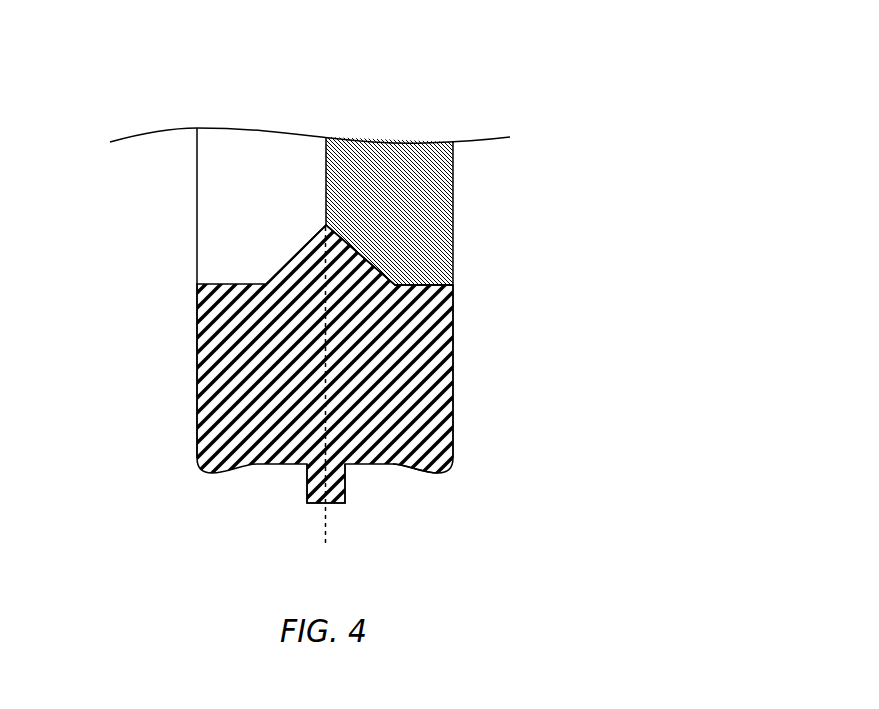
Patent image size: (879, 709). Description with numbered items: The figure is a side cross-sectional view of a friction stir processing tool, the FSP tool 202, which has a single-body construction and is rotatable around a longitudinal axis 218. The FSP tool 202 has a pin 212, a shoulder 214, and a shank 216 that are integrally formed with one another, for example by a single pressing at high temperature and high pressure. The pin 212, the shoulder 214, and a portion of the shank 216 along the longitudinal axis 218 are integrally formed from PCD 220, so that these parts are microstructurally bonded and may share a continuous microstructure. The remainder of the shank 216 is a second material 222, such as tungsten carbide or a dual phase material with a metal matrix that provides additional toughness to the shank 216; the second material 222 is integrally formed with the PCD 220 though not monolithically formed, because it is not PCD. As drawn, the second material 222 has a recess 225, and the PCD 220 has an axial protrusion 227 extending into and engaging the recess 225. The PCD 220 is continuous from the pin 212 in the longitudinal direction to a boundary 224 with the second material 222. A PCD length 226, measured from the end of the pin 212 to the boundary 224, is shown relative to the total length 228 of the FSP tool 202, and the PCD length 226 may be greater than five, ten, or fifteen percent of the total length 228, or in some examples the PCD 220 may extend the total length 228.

The FSP tool 202 is at (658, 174).
The pin 212 is at (345, 483).
The shoulder 214 is at (450, 473).
The shank 216 is at (453, 342).
The longitudinal axis 218 is at (325, 540).
The PCD 220 is at (474, 417).
The second material 222 is at (467, 200).
The boundary 224 is at (453, 283).
The recess 225 is at (303, 270).
The PCD length 226 is at (145, 492).
The axial protrusion 227 is at (306, 276).
The total length 228 is at (87, 139).